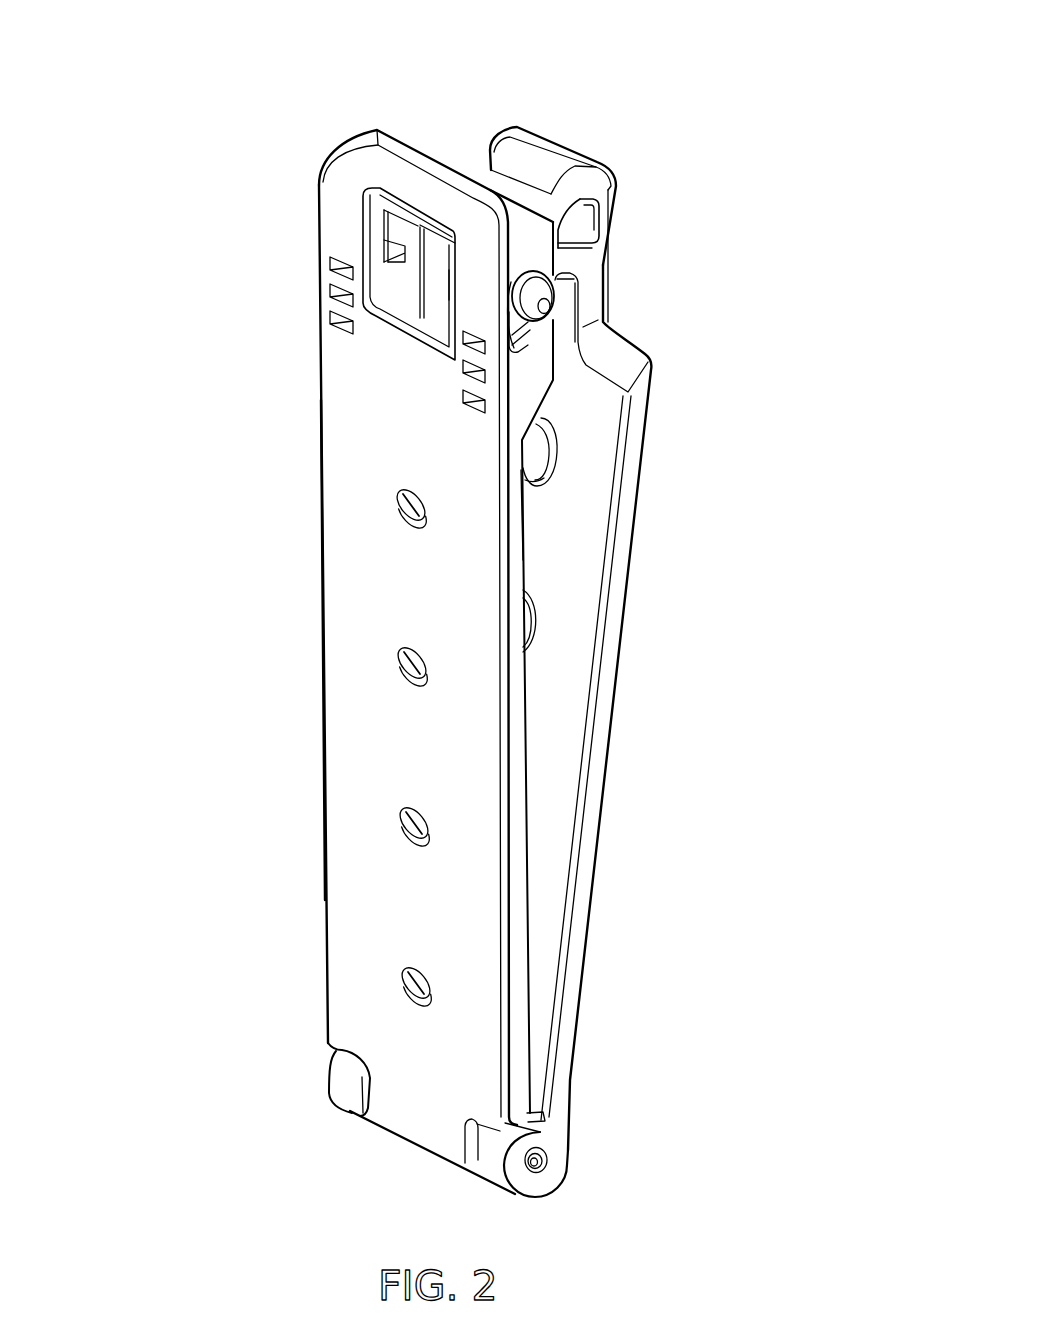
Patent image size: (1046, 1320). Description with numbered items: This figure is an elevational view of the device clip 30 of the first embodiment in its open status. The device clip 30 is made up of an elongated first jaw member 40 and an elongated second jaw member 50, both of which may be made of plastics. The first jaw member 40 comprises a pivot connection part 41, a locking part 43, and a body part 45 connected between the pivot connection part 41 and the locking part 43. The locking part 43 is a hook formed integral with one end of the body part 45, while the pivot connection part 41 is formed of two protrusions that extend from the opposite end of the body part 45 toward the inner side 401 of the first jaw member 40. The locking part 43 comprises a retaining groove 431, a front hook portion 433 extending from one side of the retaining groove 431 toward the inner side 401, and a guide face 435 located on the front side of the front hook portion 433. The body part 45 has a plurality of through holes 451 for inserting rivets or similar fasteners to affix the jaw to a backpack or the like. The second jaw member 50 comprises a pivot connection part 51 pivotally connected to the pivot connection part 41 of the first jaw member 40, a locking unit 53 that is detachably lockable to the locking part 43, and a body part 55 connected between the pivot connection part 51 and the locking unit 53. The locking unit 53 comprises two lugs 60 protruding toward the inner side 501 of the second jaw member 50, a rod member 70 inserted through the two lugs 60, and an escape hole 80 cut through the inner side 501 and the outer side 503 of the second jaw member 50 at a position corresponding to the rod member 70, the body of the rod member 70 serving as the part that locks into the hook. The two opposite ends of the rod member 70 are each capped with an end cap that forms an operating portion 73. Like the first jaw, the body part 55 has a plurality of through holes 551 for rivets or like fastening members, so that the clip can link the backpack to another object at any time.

The device clip 30 is at (420, 90).
The first jaw member 40 is at (627, 568).
The inner side of the first jaw member 401 is at (557, 663).
The pivot connection part 41 is at (550, 1168).
The locking part 43 is at (700, 180).
The retaining groove 431 is at (590, 204).
The front hook portion 433 is at (567, 214).
The guide face 435 is at (493, 187).
The body part 45 is at (601, 738).
The through holes 451 is at (536, 461).
The second jaw member 50 is at (323, 622).
The inner side of the second jaw member 501 is at (528, 766).
The outer side of the second jaw member 503 is at (360, 762).
The pivot connection part 51 is at (418, 1137).
The locking unit 53 is at (316, 261).
The body part 55 is at (322, 686).
The through holes 551 is at (403, 503).
The lugs 60 is at (397, 277).
The rod member 70 is at (389, 209).
The operating portion 73 is at (544, 287).
The escape hole 80 is at (452, 280).